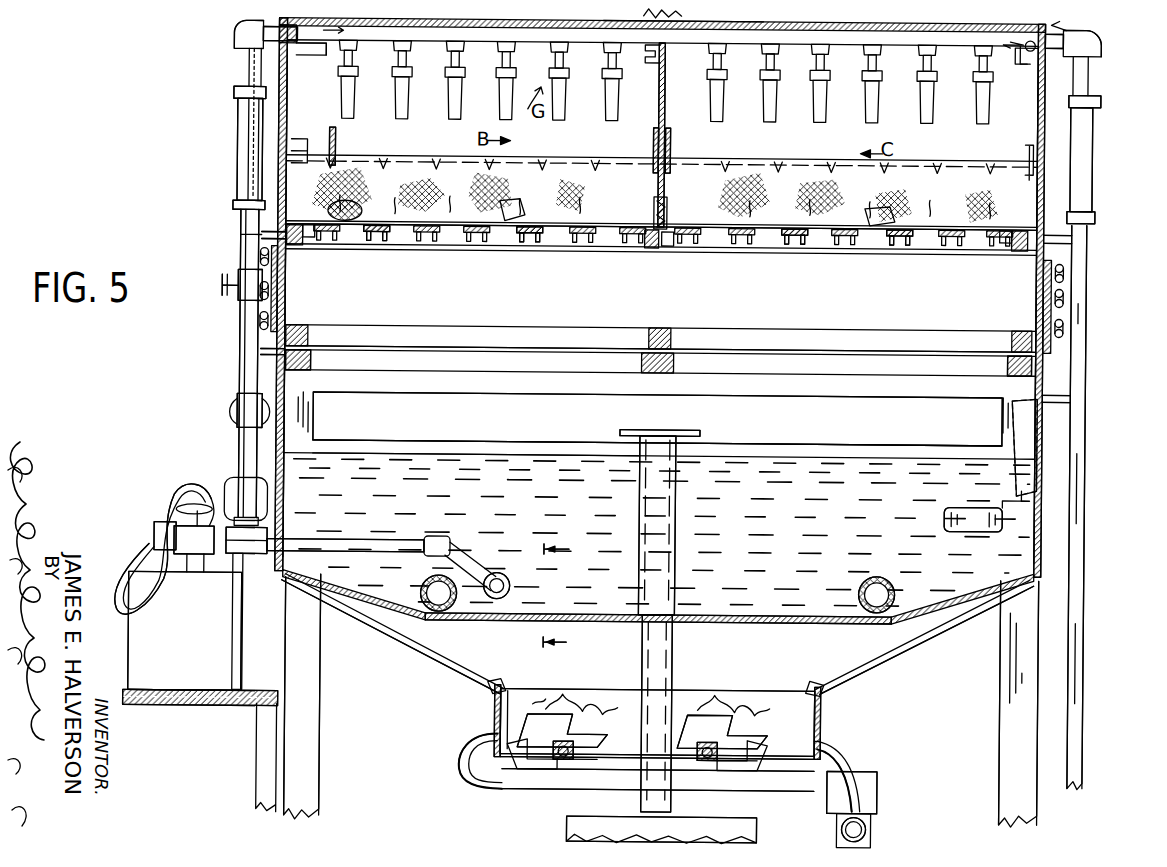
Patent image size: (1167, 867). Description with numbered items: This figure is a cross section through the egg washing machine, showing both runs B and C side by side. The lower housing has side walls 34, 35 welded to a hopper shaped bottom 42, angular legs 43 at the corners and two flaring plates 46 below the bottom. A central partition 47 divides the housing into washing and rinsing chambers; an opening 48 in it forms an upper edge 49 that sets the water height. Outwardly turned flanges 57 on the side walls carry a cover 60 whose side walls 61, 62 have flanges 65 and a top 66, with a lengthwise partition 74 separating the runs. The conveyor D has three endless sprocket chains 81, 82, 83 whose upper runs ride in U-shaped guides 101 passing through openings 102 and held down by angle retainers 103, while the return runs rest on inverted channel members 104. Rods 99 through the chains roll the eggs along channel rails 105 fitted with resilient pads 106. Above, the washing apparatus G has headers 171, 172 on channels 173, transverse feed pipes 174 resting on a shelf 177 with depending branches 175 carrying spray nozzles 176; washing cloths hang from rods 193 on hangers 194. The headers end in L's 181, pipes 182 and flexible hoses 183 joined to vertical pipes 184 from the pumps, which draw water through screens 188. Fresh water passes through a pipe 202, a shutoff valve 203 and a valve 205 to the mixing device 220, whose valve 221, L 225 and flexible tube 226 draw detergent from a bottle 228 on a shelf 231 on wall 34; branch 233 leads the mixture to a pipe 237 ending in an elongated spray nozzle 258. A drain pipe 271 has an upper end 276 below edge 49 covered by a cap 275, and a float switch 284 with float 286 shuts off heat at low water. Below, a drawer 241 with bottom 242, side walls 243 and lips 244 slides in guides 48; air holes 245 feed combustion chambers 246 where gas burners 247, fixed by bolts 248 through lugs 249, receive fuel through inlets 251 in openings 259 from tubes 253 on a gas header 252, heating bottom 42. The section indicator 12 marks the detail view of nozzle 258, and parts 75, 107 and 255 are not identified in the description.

The section line 12 is at (569, 595).
The wall 34 is at (284, 355).
The wall 35 is at (1046, 397).
The hopper shaped bottom 42 is at (768, 622).
The legs 43 is at (320, 681).
The flaring plates 46 is at (427, 650).
The partition 47 is at (538, 443).
The guides 48 is at (850, 421).
The upper edge 49 is at (492, 443).
The flanges 57 is at (263, 238).
The cover 60 is at (1063, 27).
The side wall 61 is at (276, 109).
The side wall 62 is at (1042, 82).
The flanges 65 is at (263, 209).
The top 66 is at (700, 30).
The partition 74 is at (663, 93).
The partition fastener 75 is at (666, 201).
The endless sprocket chain 81 is at (316, 242).
The endless sprocket chain 82 is at (1008, 250).
The endless sprocket chain 83 is at (668, 244).
The rod 99 is at (463, 252).
The U-shaped guides 101 is at (300, 250).
The openings 102 is at (924, 252).
The angle retainers 103 is at (274, 192).
The inverted channel member 104 is at (316, 373).
The channel members 105 is at (563, 252).
The pads 106 is at (513, 220).
The roller 107 is at (393, 252).
The header 171 is at (305, 37).
The header 172 is at (1025, 45).
The channels 173 is at (310, 59).
The transverse feed pipes 174 is at (438, 43).
The depending branches 175 is at (503, 45).
The spray nozzles 176 is at (456, 89).
The shelf 177 is at (650, 61).
The L 181 is at (236, 43).
The pipe 182 is at (243, 57).
The flexible hose 183 is at (235, 132).
The vertical pipes 184 is at (246, 334).
The screens 188 is at (445, 614).
The supporting rod 193 is at (305, 157).
The hangers 194 is at (331, 130).
The pipe 202 is at (251, 63).
The shutoff valve 203 is at (226, 288).
The valve 205 is at (240, 415).
The mixing device 220 is at (191, 583).
The valve 221 is at (193, 533).
The L 225 is at (158, 543).
The flexible tube 226 is at (162, 503).
The bottle 228 is at (167, 686).
The shelf 231 is at (207, 702).
The branch 233 is at (244, 552).
The pipe 237 is at (360, 554).
The drawer 241 is at (503, 776).
The bottom 242 is at (625, 763).
The side walls 243 is at (500, 726).
The lips 244 is at (497, 688).
The air holes 245 is at (600, 769).
The combustion chambers 246 is at (540, 686).
The gas burners 247 is at (590, 730).
The bolts 248 is at (565, 742).
The lugs 249 is at (566, 750).
The gas inlets 251 is at (520, 766).
The gas header 252 is at (870, 829).
The tubes 253 is at (463, 771).
The box 255 is at (880, 779).
The spray nozzle 258 is at (498, 602).
The openings 259 is at (826, 736).
The drain pipe 271 is at (674, 639).
The cap 275 is at (695, 431).
The upper end 276 is at (650, 451).
The float operated switch 284 is at (1028, 470).
The floats 286 is at (950, 531).